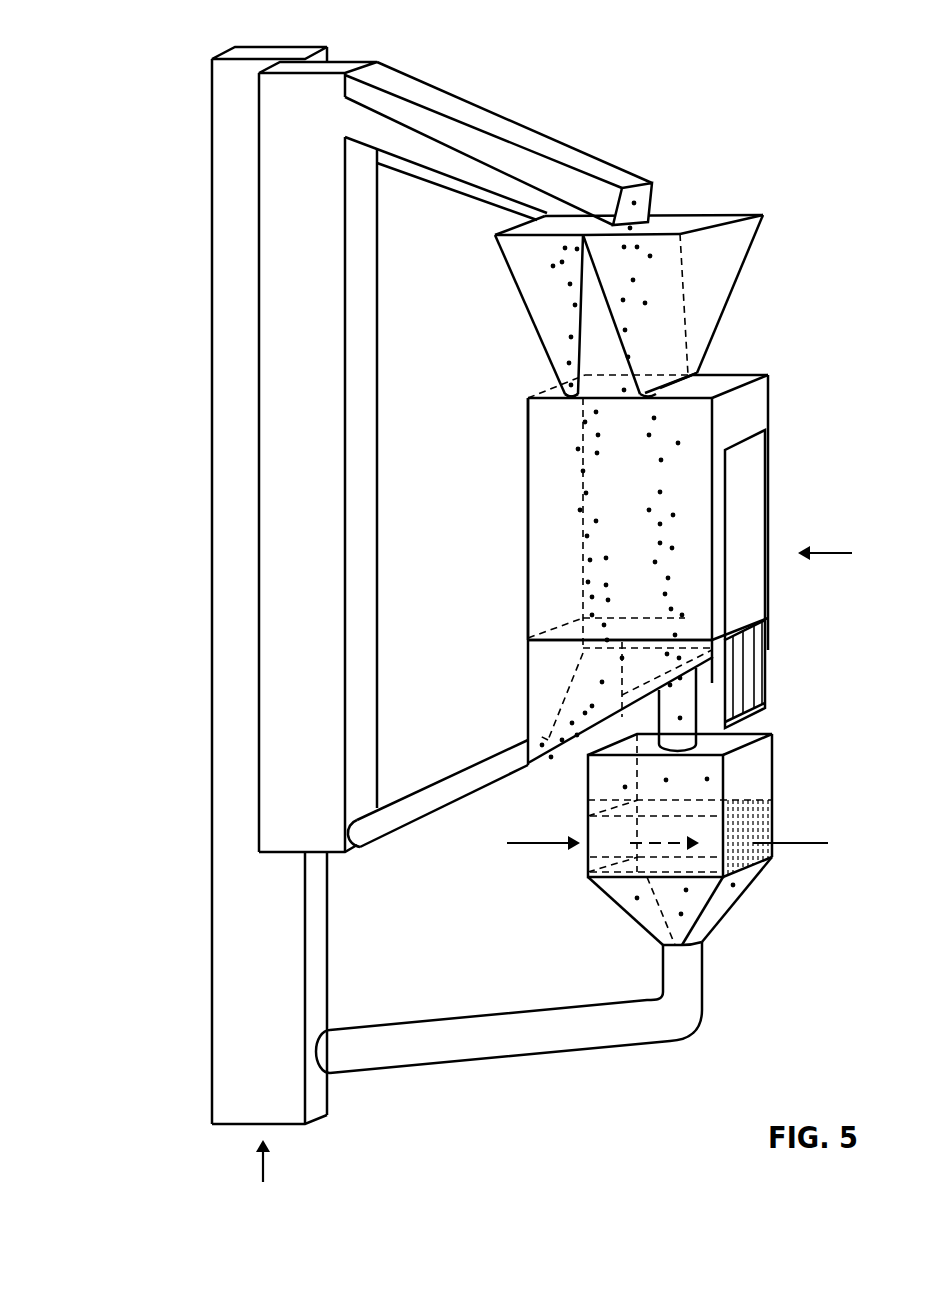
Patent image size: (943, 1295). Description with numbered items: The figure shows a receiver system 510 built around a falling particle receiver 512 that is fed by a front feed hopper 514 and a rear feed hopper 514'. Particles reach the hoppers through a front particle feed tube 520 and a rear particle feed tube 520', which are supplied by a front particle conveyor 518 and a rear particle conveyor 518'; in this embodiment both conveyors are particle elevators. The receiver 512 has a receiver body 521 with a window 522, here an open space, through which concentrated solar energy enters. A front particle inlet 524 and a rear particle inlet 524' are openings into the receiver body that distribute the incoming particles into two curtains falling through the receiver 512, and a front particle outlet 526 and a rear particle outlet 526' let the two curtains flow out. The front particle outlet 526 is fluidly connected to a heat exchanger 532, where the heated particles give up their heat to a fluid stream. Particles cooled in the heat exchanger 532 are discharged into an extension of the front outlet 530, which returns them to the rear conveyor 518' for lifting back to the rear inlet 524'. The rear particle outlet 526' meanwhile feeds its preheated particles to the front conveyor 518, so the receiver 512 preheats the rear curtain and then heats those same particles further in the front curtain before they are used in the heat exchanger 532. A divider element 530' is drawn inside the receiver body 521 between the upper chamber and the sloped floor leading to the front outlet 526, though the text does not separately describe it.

The receiver system 510 is at (160, 38).
The falling particle receiver 512 is at (771, 394).
The front feed hopper 514 is at (694, 272).
The rear feed hopper 514' is at (586, 306).
The front particle conveyor 518 is at (403, 457).
The rear particle conveyor 518' is at (221, 585).
The front particle feed tube 520 is at (498, 143).
The rear particle feed tube 520' is at (457, 212).
The receiver body 521 is at (527, 422).
The window 522 is at (770, 506).
The front particle inlet 524 is at (738, 334).
The rear particle inlet 524' is at (512, 361).
The front particle outlet 526 is at (760, 685).
The rear particle outlet 526' is at (438, 773).
The extension of the front outlet 530 is at (509, 1010).
The sieve / separator plate 530' is at (568, 587).
The heat exchanger 532 is at (773, 789).